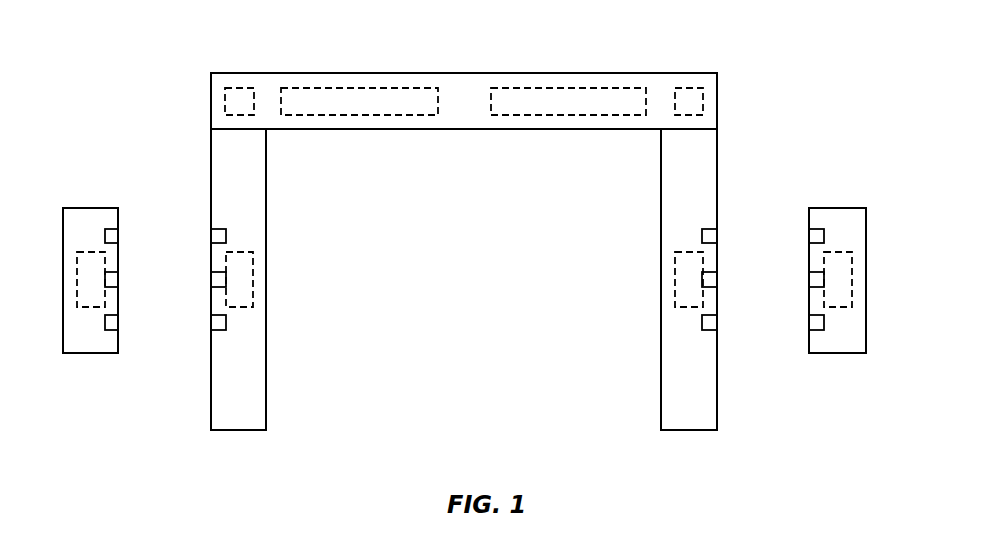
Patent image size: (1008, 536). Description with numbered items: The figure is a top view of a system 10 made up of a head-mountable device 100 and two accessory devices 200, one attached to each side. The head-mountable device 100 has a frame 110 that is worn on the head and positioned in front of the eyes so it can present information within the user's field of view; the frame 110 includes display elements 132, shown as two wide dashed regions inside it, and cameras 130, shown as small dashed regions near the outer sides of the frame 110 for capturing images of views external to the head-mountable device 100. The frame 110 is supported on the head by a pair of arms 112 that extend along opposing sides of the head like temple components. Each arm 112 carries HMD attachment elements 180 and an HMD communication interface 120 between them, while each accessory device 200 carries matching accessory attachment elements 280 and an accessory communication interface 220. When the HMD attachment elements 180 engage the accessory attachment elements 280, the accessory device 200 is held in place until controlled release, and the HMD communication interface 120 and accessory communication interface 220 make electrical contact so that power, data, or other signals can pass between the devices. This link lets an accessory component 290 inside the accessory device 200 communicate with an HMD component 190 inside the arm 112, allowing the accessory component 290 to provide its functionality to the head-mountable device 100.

The system 10 is at (110, 15).
The head-mountable device 100 is at (313, 73).
The frame 110 is at (598, 73).
The arm 112 is at (211, 163).
The HMD communication interface 120 is at (211, 279).
The camera 130 is at (247, 88).
The display element 132 is at (345, 115).
The HMD attachment element 180 is at (211, 238).
The HMD component 190 is at (253, 272).
The accessory device 200 is at (92, 353).
The accessory communication interface 220 is at (118, 280).
The accessory attachment element 280 is at (111, 229).
The accessory component 290 is at (77, 272).